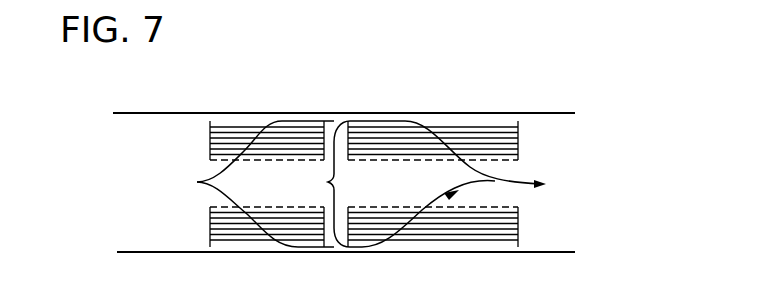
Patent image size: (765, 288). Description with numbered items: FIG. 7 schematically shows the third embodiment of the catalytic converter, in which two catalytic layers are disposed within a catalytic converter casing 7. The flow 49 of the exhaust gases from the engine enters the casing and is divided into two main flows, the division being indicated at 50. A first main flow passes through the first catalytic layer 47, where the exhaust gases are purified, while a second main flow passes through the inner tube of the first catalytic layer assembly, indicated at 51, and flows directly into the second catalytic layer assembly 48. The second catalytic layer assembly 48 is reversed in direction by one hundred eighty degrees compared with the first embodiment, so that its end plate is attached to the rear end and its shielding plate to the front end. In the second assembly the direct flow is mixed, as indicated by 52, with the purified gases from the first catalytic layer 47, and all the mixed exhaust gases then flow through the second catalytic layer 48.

The catalytic converter casing 7 is at (162, 112).
The first catalytic layer 47 is at (284, 150).
The second catalytic layer assembly 48 is at (468, 140).
The flow of the exhaust gases 49 is at (130, 182).
The divided flow stream 50 is at (192, 182).
The central channel 51 is at (328, 182).
The mixing 52 is at (380, 119).